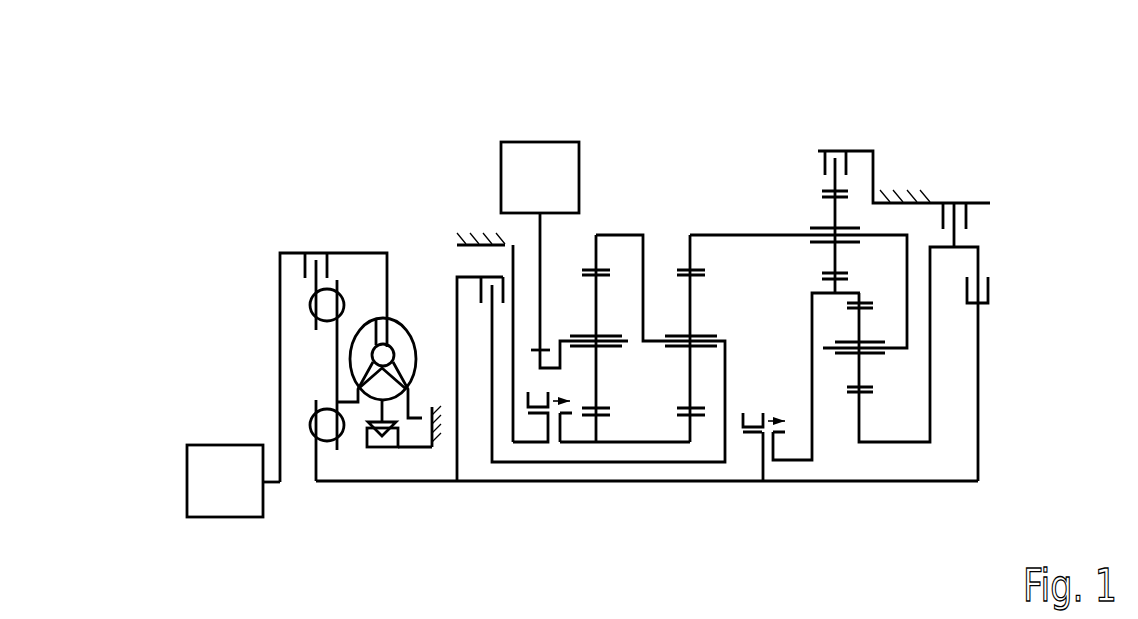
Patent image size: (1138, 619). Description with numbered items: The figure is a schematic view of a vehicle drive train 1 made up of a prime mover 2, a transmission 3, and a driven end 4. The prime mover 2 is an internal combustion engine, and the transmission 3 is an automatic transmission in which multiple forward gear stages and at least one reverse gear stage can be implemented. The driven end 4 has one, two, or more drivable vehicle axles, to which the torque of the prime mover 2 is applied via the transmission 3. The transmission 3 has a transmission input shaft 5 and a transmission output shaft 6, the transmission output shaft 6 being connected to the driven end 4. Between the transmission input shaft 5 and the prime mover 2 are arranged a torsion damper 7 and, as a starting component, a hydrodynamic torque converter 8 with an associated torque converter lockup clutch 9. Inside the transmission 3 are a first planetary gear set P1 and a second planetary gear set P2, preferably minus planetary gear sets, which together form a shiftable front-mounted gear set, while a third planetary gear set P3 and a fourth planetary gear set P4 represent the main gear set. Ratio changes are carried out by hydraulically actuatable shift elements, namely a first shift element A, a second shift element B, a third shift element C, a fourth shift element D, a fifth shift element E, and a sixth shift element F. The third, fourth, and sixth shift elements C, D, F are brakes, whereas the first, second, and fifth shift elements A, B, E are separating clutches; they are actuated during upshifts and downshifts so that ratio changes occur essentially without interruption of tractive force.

The vehicle drive train 1 is at (589, 312).
The prime mover 2 is at (213, 455).
The transmission 3 is at (770, 312).
The driven end 4 is at (537, 157).
The transmission input shaft 5 is at (353, 482).
The transmission output shaft 6 is at (538, 355).
The torsion damper 7 is at (323, 368).
The hydrodynamic torque converter 8 is at (402, 315).
The torque converter lockup clutch 9 is at (312, 243).
The first shift element A is at (752, 440).
The second shift element B is at (997, 290).
The third shift element C is at (958, 195).
The fourth shift element D is at (838, 143).
The fifth shift element E is at (488, 267).
The sixth shift element F is at (565, 420).
The first planetary gear set P1 is at (859, 452).
The second planetary gear set P2 is at (813, 212).
The third planetary gear set P3 is at (690, 222).
The fourth planetary gear set P4 is at (596, 222).